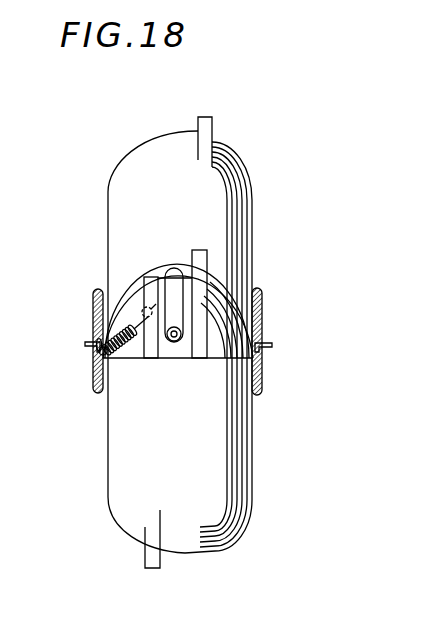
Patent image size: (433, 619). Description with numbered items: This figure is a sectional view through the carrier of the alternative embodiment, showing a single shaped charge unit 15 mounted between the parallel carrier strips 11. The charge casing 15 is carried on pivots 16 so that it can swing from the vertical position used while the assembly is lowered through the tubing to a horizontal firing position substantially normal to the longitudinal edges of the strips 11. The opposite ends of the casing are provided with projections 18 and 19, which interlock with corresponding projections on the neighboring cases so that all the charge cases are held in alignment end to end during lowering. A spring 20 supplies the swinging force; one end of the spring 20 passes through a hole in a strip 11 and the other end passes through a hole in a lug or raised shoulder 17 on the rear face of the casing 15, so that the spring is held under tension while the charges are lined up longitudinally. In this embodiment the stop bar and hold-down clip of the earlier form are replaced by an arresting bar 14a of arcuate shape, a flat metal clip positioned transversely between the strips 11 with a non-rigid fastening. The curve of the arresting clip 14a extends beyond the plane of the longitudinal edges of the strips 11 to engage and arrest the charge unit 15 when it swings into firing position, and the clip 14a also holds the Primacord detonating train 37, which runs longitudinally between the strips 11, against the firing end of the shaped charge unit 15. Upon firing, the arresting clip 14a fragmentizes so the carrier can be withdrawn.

The carrier strips 11 is at (95, 373).
The arcuate shaped arresting bar 14a is at (157, 263).
The shaped charge unit 15 is at (233, 200).
The pivots 16 is at (93, 346).
The lug or raised shoulder 17 is at (145, 278).
The projection 18 is at (213, 133).
The projection 19 is at (207, 261).
The spring 20 is at (112, 358).
The Primacord detonating train 37 is at (175, 341).